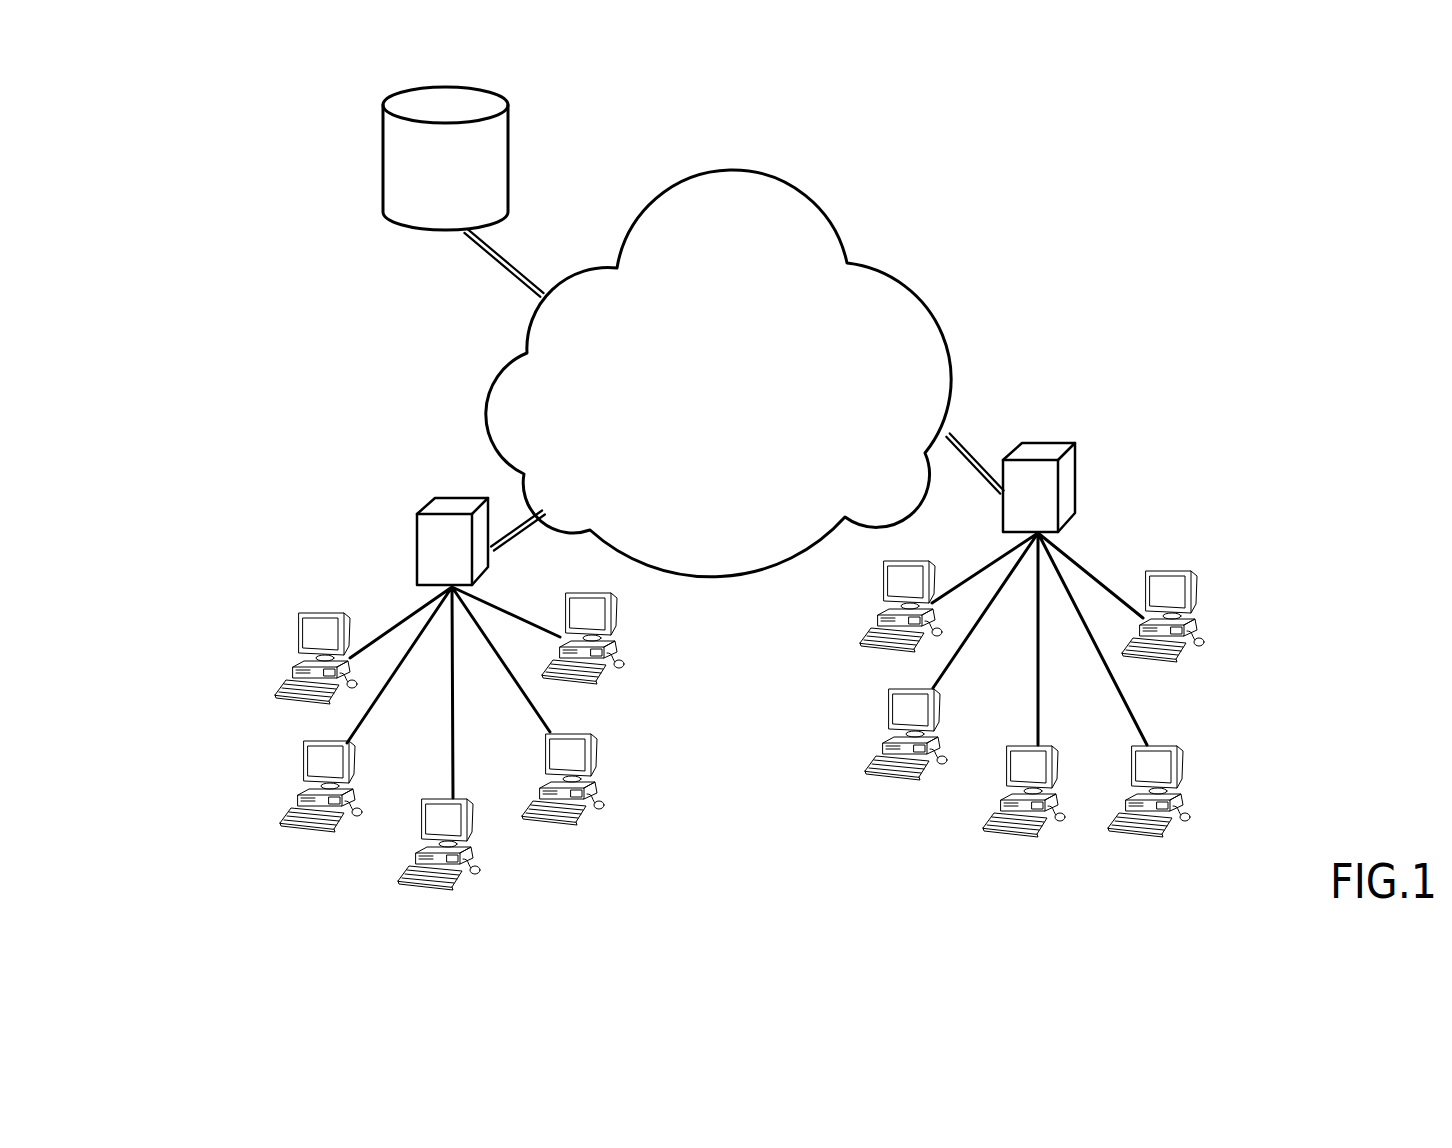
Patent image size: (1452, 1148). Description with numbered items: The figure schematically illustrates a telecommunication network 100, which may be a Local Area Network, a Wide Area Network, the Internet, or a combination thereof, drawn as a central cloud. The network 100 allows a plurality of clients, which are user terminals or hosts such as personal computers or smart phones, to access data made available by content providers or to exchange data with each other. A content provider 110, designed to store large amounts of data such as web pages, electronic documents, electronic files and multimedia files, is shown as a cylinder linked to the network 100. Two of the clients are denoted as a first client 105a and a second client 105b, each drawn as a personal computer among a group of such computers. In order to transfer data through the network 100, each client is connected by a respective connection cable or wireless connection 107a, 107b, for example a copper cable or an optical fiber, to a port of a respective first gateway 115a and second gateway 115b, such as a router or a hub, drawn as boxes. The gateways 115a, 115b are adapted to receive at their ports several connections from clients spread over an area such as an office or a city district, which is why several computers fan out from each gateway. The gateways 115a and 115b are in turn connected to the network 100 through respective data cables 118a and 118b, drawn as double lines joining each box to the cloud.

The telecommunication network 100 is at (832, 210).
The content provider 110 is at (382, 162).
The first gateway 115a is at (435, 498).
The second gateway 115b is at (1075, 460).
The data cable 118a is at (532, 510).
The data cable 118b is at (963, 438).
The connection cable or wireless connection 107a is at (407, 612).
The connection cable or wireless connection 107b is at (1060, 550).
The first client 105a is at (325, 612).
The second client 105b is at (1183, 567).